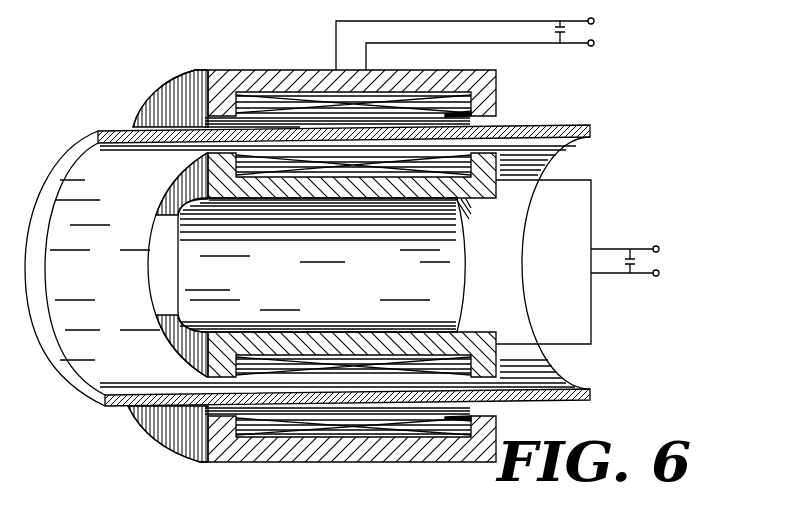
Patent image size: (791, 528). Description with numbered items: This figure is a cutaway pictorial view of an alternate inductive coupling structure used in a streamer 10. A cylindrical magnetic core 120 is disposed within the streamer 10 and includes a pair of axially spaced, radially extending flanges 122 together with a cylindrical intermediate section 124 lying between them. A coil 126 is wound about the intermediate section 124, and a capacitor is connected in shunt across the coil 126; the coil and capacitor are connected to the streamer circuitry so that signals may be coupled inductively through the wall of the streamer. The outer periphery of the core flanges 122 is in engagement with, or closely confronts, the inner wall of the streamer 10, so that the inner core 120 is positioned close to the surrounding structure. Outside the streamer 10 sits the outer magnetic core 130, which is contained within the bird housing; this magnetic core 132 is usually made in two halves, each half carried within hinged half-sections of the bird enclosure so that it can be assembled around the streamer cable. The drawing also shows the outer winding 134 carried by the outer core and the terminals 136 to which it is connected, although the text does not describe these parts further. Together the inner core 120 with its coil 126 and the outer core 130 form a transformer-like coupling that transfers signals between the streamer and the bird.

The streamer 10 is at (557, 125).
The cylindrical magnetic core 120 is at (298, 296).
The flanges 122 is at (192, 189).
The cylindrical intermediate section 124 is at (382, 206).
The coil 126 is at (458, 213).
The outer magnetic core 130 is at (252, 70).
The magnetic core 132 is at (186, 91).
The outer coil 134 is at (320, 94).
The terminals 136 is at (600, 28).